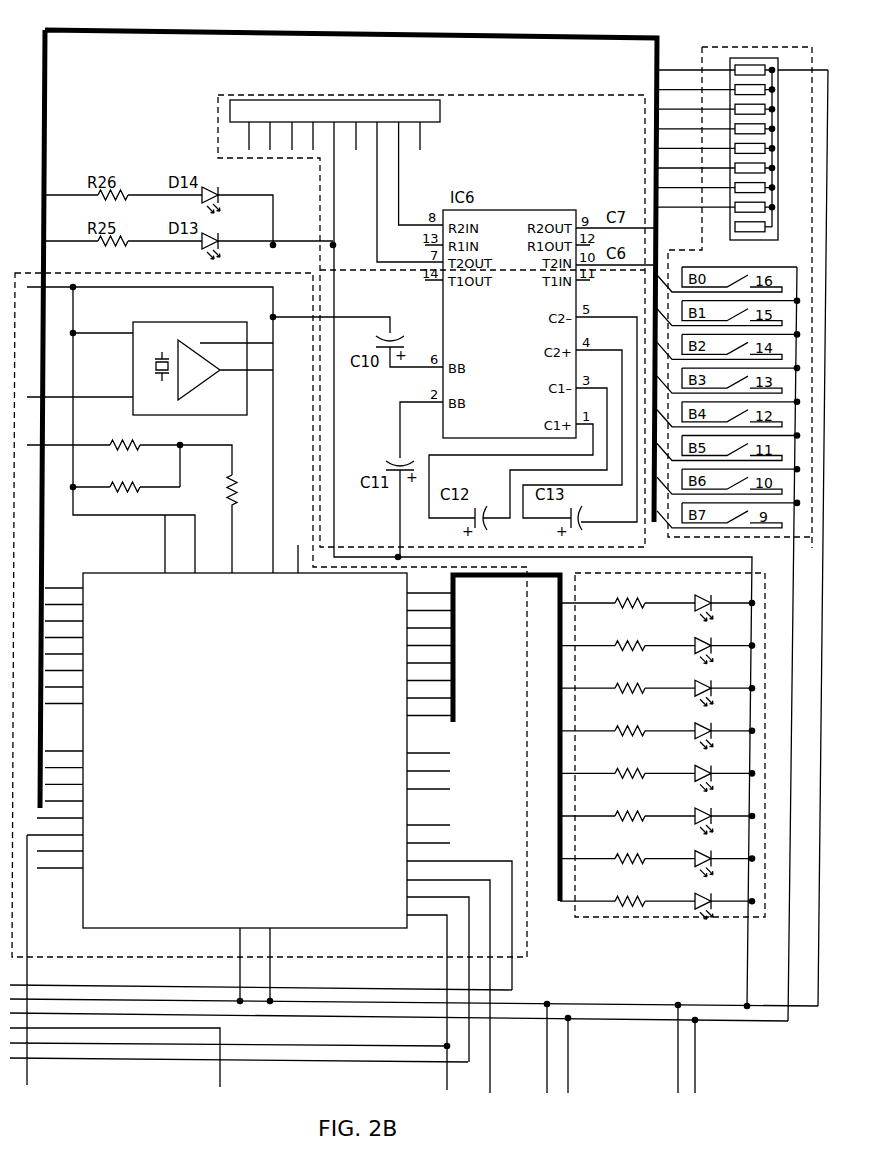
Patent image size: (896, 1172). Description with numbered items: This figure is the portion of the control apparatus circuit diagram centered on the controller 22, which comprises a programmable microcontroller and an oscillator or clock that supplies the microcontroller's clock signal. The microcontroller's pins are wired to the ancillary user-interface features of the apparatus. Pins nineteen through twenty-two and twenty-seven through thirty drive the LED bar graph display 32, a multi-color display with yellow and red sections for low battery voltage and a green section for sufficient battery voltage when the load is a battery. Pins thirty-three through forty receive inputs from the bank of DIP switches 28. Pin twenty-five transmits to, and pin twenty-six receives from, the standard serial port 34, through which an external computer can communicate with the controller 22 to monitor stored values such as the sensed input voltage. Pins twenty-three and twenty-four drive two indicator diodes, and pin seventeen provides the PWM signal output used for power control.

The controller 22 is at (527, 940).
The bank of DIP switches 28 is at (730, 47).
The LED bar graph display 32 is at (676, 918).
The RS-232 serial port 34 is at (282, 93).